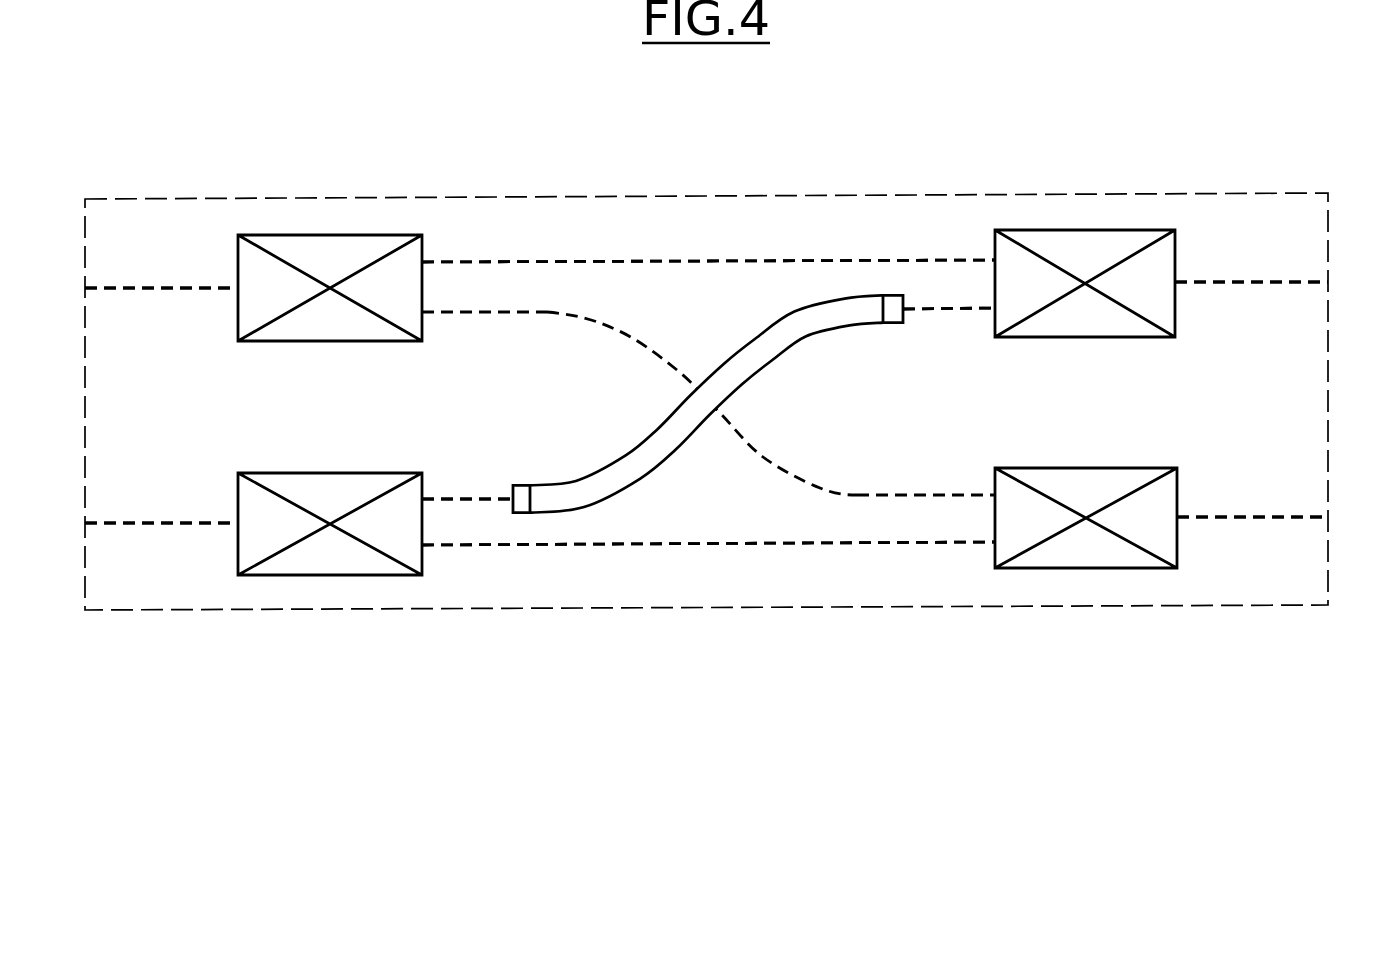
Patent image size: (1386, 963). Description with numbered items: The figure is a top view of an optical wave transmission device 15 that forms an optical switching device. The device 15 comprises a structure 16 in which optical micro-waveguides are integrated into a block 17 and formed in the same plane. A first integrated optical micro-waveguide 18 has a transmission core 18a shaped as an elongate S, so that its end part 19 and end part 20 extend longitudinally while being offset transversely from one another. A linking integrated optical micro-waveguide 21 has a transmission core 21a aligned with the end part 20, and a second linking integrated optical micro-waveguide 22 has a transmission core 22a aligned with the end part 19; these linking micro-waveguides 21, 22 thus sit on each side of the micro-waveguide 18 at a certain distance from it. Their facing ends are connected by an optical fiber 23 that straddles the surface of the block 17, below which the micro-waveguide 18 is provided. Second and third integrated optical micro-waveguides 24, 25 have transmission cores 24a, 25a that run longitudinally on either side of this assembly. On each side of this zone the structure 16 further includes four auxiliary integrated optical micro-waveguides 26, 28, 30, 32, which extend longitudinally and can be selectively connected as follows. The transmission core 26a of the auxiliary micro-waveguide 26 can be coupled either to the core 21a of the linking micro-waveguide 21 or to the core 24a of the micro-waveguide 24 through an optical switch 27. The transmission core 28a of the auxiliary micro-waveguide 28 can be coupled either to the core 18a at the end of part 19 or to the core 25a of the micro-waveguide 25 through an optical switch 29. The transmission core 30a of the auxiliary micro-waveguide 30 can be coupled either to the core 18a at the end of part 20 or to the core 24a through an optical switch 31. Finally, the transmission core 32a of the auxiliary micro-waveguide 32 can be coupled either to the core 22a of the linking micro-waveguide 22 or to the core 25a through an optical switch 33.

The optical wave transmission device 15 is at (1327, 179).
The structure 16 is at (545, 228).
The block 17 is at (775, 238).
The first integrated optical micro-waveguide 18 is at (783, 474).
The transmission core 18a is at (740, 437).
The end part 19 is at (480, 310).
The end part 20 is at (902, 496).
The linking integrated optical micro-waveguide 21 is at (470, 500).
The transmission core 21a is at (452, 500).
The linking integrated optical micro-waveguide 22 is at (965, 308).
The transmission core 22a is at (928, 304).
The optical fiber 23 is at (737, 363).
The second integrated optical micro-waveguide 24 is at (556, 546).
The transmission core 24a is at (810, 544).
The third integrated optical micro-waveguide 25 is at (592, 260).
The transmission core 25a is at (740, 259).
The auxiliary integrated optical micro-waveguide 26 is at (182, 523).
The transmission core 26a is at (128, 523).
The optical switch 27 is at (325, 547).
The auxiliary integrated optical micro-waveguide 28 is at (180, 288).
The transmission core 28a is at (127, 288).
The first optical coupler 29 is at (323, 262).
The auxiliary integrated optical micro-waveguide 30 is at (1273, 517).
The transmission core 30a is at (1232, 517).
The optical switch 31 is at (1082, 540).
The auxiliary integrated optical micro-waveguide 32 is at (1272, 282).
The transmission core 32a is at (1233, 278).
The optical switch 33 is at (1082, 257).